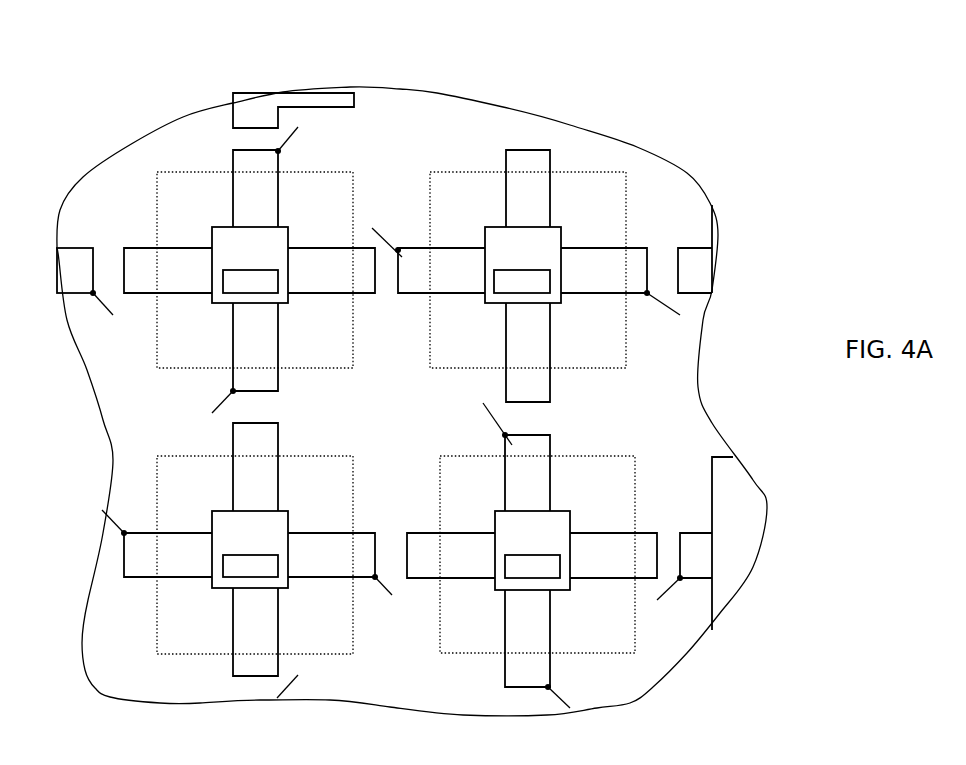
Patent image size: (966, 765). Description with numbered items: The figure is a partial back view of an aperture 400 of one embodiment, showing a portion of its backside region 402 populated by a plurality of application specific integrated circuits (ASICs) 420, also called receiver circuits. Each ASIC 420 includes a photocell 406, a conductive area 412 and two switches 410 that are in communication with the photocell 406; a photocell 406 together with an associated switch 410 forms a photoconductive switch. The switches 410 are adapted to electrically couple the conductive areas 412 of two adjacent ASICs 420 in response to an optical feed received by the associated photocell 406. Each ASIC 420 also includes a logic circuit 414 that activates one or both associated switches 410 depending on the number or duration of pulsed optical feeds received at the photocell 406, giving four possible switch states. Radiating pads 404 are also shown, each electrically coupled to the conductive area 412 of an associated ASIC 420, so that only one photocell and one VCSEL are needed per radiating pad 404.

The memory array layout 400 is at (715, 124).
The substrate 402 is at (680, 433).
The radiating pad 404 is at (330, 337).
The photocell 406 is at (391, 408).
The switch 410 is at (396, 249).
The conductive area 412 is at (384, 413).
The logic circuit 414 is at (245, 281).
The application specific integrated circuit 420 is at (290, 373).